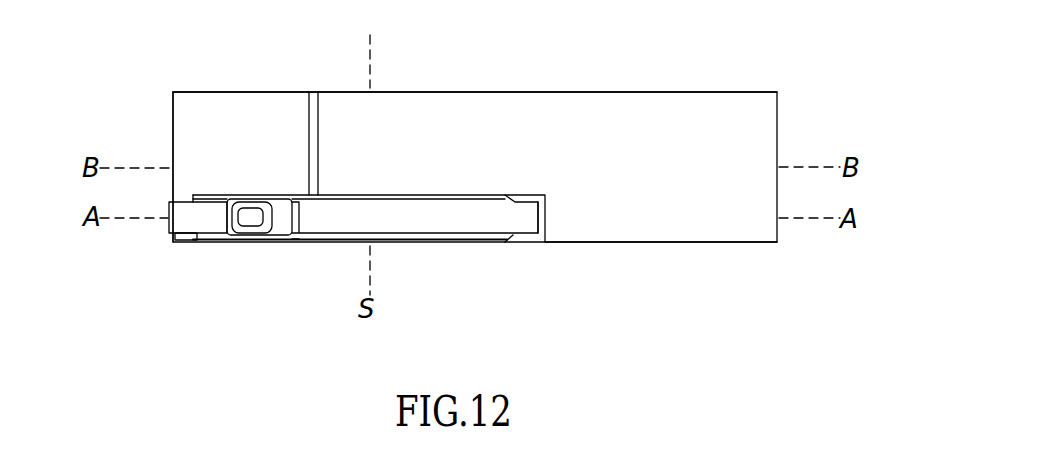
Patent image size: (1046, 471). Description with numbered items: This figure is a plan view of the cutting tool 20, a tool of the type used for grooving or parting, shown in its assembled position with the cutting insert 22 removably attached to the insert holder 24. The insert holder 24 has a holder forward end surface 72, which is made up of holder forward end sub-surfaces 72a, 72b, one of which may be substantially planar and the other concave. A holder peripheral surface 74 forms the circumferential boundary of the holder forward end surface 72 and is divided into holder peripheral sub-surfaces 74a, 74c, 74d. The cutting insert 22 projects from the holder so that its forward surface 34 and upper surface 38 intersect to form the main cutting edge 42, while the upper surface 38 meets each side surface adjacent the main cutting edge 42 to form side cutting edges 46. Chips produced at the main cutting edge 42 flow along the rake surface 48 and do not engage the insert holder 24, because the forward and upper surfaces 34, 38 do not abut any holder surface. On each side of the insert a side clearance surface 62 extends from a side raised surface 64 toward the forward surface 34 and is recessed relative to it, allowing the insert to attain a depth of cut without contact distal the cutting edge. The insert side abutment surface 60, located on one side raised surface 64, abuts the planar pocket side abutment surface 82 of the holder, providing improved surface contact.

The cutting tool 20 is at (735, 63).
The cutting insert 22 is at (479, 264).
The insert holder 24 is at (553, 63).
The forward surface 34 is at (183, 219).
The upper surface 38 is at (510, 219).
The main cutting edge 42 is at (227, 222).
The side cutting edge 46 is at (250, 197).
The rake surface 48 is at (238, 197).
The insert side abutment surface 60 is at (452, 193).
The side clearance surface 62 is at (183, 198).
The side raised surface 64 is at (403, 193).
The holder forward end surface 72 is at (283, 112).
The holder forward end sub-surface 72a is at (250, 112).
The holder forward end sub-surface 72b is at (172, 117).
The holder peripheral surface 74 is at (752, 128).
The holder peripheral sub-surface 74a is at (728, 243).
The holder peripheral sub-surface 74c is at (757, 92).
The holder peripheral sub-surface 74d is at (638, 105).
The pocket side abutment surface 82 is at (422, 243).